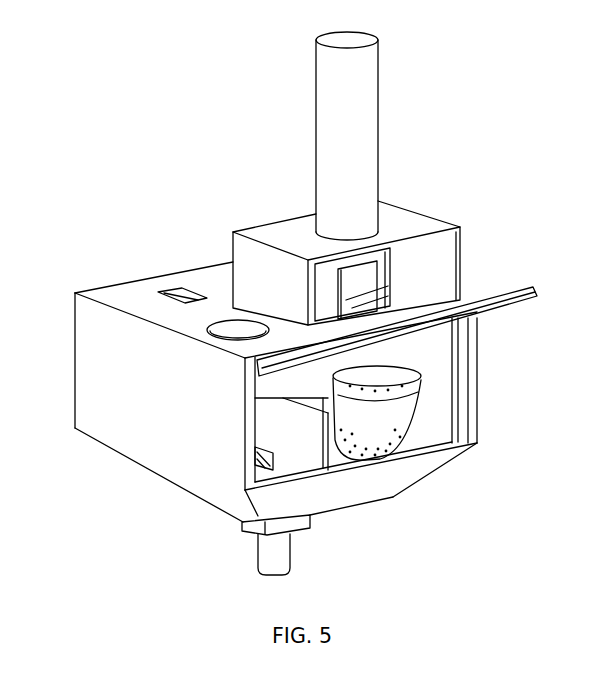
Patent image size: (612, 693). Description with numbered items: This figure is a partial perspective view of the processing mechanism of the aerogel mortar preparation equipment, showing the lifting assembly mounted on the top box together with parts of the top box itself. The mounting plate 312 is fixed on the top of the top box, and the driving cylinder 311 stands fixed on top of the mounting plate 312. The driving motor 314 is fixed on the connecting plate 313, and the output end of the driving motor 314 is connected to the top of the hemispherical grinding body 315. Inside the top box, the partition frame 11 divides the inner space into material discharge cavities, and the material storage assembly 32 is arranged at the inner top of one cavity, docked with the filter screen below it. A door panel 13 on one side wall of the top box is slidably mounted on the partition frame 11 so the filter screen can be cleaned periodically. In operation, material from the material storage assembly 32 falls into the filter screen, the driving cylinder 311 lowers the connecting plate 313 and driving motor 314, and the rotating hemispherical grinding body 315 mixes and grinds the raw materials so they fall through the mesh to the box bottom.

The partition frame 11 is at (307, 430).
The door panel 13 is at (245, 358).
The material storage assembly 32 is at (282, 379).
The driving cylinder 311 is at (353, 132).
The mounting plate 312 is at (277, 233).
The connecting plate 313 is at (357, 292).
The driving motor 314 is at (487, 321).
The hemispherical grinding body 315 is at (400, 364).